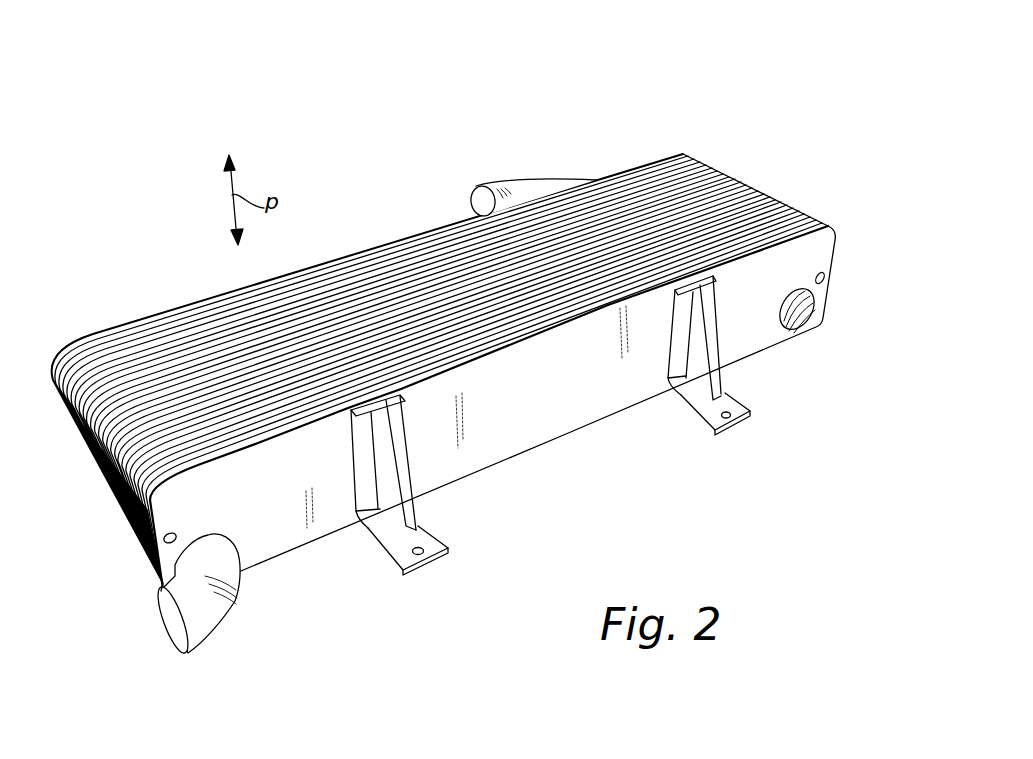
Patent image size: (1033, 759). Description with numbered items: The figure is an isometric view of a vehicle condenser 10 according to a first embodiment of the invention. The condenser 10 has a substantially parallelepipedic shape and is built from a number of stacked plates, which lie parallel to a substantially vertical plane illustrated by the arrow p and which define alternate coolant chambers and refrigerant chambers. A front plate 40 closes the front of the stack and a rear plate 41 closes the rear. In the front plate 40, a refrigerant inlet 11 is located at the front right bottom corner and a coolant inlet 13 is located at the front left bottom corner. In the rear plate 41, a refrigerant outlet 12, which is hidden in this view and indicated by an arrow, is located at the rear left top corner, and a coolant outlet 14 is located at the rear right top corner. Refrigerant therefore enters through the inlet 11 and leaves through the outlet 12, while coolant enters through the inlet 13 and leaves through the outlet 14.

The vehicle condenser 10 is at (752, 115).
The refrigerant inlet 11 is at (790, 323).
The refrigerant outlet 12 is at (115, 310).
The coolant inlet 13 is at (218, 615).
The coolant outlet 14 is at (535, 172).
The front plate 40 is at (558, 425).
The rear plate 41 is at (410, 227).